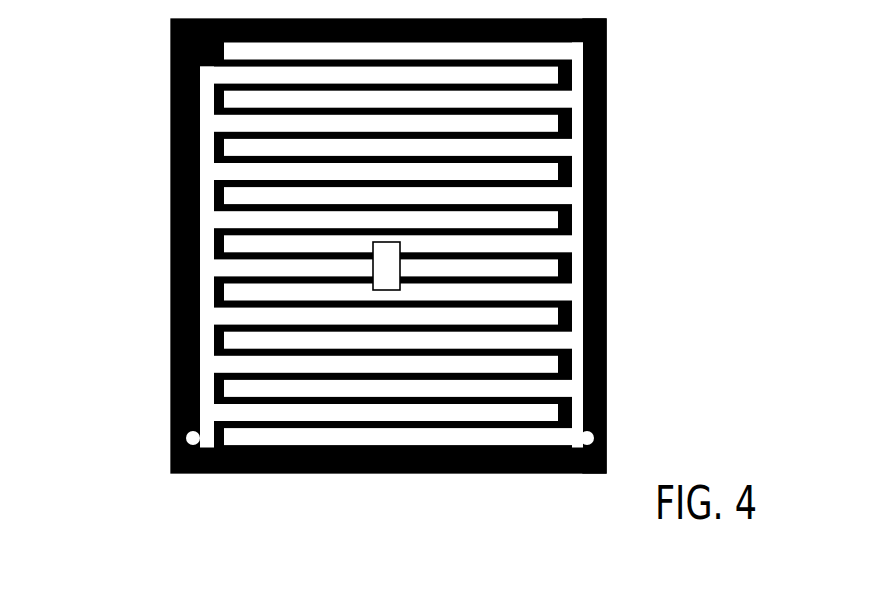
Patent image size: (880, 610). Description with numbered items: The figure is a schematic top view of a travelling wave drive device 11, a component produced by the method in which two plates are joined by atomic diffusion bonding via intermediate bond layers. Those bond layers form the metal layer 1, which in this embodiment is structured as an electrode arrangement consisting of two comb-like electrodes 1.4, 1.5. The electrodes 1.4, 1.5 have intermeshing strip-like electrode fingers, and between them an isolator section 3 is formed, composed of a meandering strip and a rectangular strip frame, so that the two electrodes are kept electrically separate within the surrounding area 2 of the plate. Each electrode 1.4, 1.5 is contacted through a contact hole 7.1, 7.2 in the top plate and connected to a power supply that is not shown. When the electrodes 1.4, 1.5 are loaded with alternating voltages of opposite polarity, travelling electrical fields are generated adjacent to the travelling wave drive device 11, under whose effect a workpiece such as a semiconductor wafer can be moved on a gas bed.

The travelling wave drive device 11 is at (120, 56).
The substrate 2 is at (623, 97).
The isolator section 3 is at (597, 214).
The metal layer 1 is at (394, 280).
The comb-like electrode 1.4 is at (201, 254).
The comb-like electrode 1.5 is at (575, 262).
The contact hole 7.1 is at (192, 439).
The contact hole 7.2 is at (594, 437).